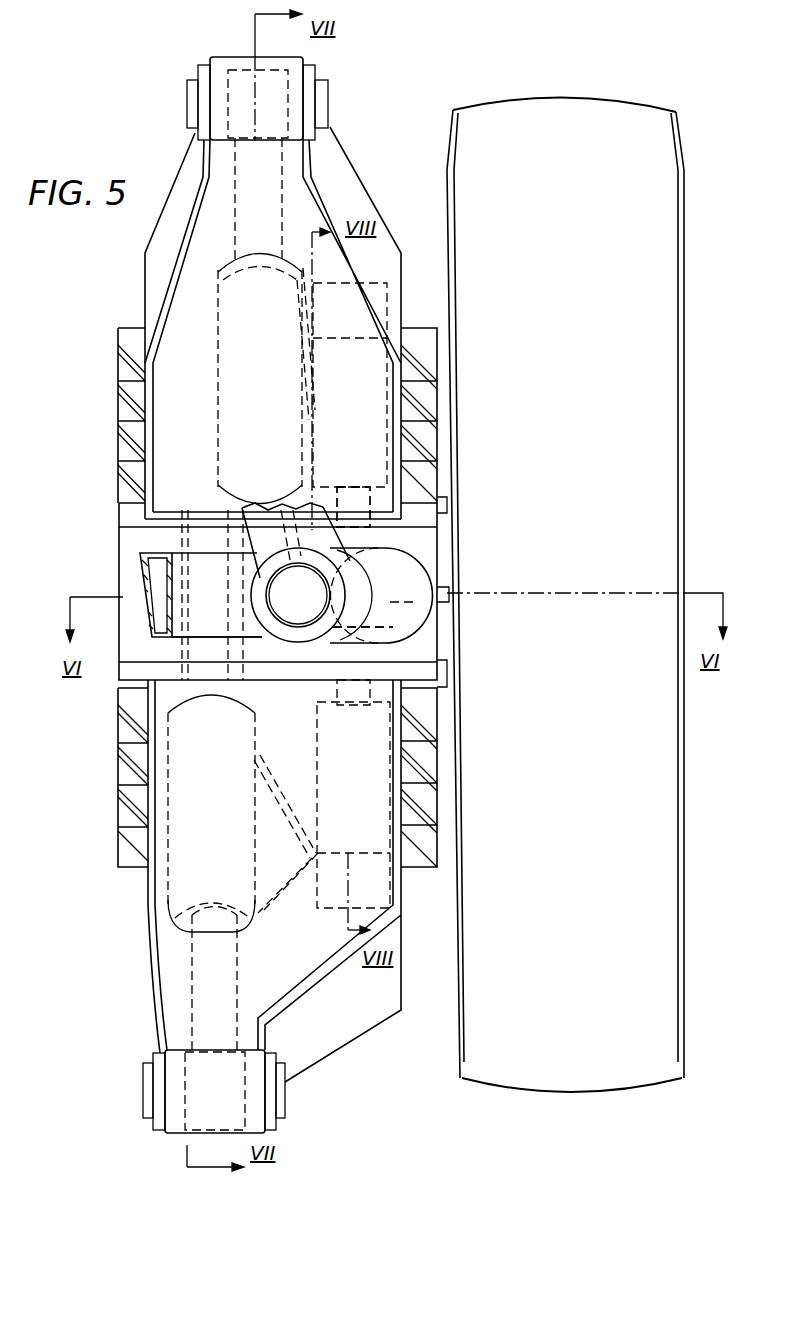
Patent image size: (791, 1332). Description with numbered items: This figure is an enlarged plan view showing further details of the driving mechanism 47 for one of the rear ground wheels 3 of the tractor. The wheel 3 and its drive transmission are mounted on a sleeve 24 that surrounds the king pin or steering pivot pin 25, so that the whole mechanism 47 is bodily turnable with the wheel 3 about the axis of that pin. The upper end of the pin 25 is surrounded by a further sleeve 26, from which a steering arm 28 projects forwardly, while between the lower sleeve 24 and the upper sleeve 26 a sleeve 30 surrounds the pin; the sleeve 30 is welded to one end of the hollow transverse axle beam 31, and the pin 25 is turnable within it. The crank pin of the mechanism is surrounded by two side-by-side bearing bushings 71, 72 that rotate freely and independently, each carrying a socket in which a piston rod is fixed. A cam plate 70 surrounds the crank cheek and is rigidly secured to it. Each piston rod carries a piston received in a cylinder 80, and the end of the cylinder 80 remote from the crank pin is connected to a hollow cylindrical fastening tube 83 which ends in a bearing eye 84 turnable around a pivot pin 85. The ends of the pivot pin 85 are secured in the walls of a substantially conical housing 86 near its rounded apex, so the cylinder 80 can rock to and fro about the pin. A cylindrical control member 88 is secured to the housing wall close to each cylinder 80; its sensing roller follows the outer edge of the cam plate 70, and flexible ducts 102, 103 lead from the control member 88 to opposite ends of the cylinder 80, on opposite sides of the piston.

The rear ground wheel 3 is at (505, 1088).
The sleeve 24 is at (423, 573).
The king pin or steering pivot pin 25 is at (305, 620).
The further sleeve 26 is at (368, 594).
The steering arm 28 is at (270, 508).
The sleeve 30 is at (396, 628).
The hollow transverse axle beam 31 is at (158, 578).
The driving mechanism 47 is at (283, 695).
The cam plate 70 is at (355, 540).
The bearing bushing 71 is at (263, 662).
The bearing bushing 72 is at (193, 653).
The cylinder 80 is at (222, 365).
The hollow cylindrical fastening tube 83 is at (243, 221).
The bearing eye 84 is at (237, 73).
The pivot pin 85 is at (326, 98).
The conical housing 86 is at (153, 241).
The control member 88 is at (385, 283).
The duct 102 is at (306, 306).
The duct 103 is at (313, 410).